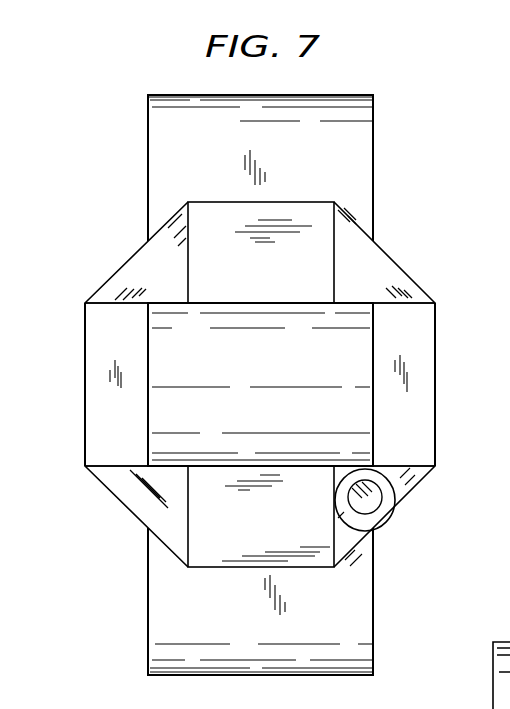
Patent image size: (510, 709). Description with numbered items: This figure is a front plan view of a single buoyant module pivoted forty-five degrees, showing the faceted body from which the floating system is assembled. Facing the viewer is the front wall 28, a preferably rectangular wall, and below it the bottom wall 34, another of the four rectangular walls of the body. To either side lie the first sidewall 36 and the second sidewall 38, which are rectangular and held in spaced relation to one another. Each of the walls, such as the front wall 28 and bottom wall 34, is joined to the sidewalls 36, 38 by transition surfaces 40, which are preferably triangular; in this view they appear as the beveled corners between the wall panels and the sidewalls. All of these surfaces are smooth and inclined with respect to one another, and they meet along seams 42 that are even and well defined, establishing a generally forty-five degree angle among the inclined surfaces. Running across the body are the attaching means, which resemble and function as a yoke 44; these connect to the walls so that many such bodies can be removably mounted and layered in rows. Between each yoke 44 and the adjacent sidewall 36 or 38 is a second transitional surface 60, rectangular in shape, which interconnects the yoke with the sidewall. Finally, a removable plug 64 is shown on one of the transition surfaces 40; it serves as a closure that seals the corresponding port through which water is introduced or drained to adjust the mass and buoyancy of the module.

The front wall 28 is at (272, 284).
The bottom wall 34 is at (272, 535).
The first sidewall 36 is at (436, 360).
The second sidewall 38 is at (85, 380).
The transition surfaces 40 is at (169, 285).
The seams 42 is at (147, 335).
The yoke 44 is at (356, 118).
The second transitional surfaces 60 is at (132, 456).
The removable plug 64 is at (388, 518).